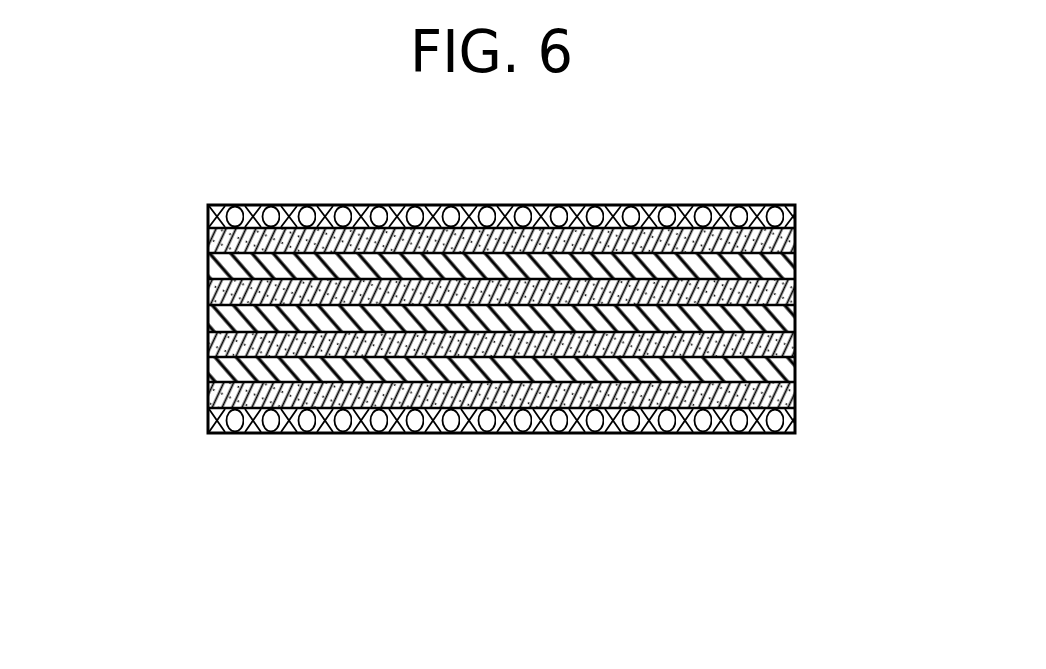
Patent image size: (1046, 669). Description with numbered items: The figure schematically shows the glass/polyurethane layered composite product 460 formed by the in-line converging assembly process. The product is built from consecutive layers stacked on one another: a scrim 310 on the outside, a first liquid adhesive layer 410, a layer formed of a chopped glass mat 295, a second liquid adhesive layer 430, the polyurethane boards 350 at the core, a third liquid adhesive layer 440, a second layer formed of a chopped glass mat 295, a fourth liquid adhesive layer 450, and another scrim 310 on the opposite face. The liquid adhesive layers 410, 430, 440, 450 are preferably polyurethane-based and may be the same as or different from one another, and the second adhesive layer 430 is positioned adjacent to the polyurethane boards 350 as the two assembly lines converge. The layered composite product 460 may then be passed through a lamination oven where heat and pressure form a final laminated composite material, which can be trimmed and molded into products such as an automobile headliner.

The layered composite product 460 is at (663, 177).
The scrim 310 is at (478, 206).
The fourth liquid adhesive layer 450 is at (795, 241).
The chopped glass mat layer 295 is at (208, 272).
The third liquid adhesive layer 440 is at (795, 290).
The polyurethane boards 350 is at (208, 322).
The second liquid adhesive layer 430 is at (795, 342).
The first liquid adhesive layer 410 is at (795, 392).